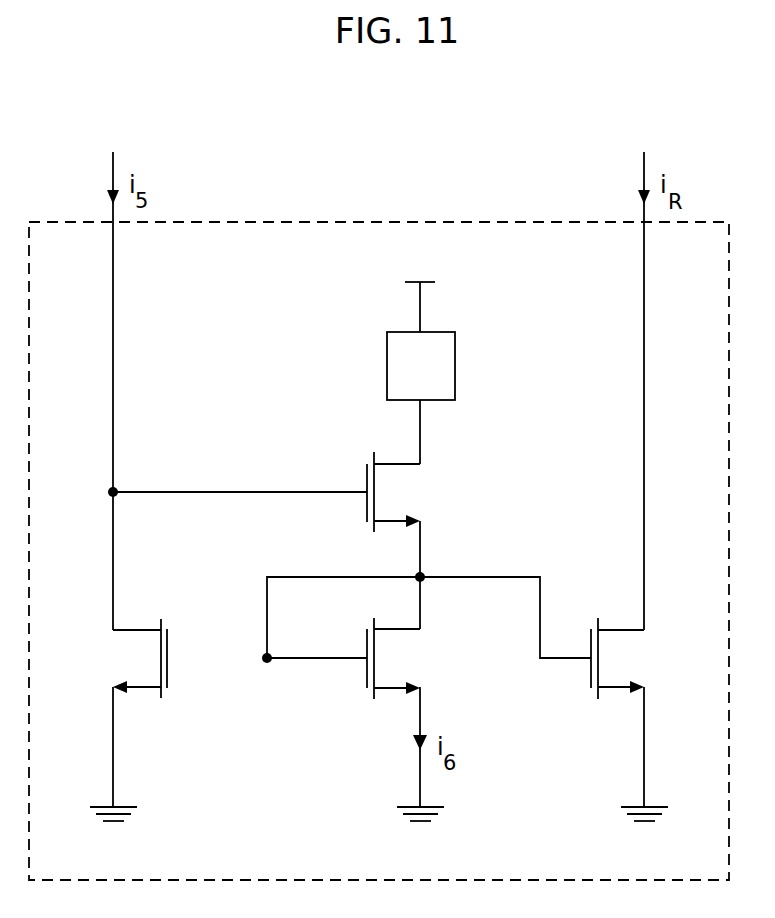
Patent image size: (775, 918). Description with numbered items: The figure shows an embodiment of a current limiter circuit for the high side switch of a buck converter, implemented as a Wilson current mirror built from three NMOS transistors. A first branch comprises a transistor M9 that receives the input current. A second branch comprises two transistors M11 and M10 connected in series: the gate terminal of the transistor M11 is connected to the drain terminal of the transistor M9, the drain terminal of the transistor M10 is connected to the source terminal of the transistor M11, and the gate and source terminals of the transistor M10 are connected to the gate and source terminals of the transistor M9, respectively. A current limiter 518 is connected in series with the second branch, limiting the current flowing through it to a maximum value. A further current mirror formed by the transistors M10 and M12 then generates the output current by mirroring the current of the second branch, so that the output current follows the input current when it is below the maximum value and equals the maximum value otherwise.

The current limiter 518 is at (392, 385).
The transistor M9 is at (134, 664).
The transistor M10 is at (395, 655).
The transistor M11 is at (402, 487).
The transistor M12 is at (617, 657).